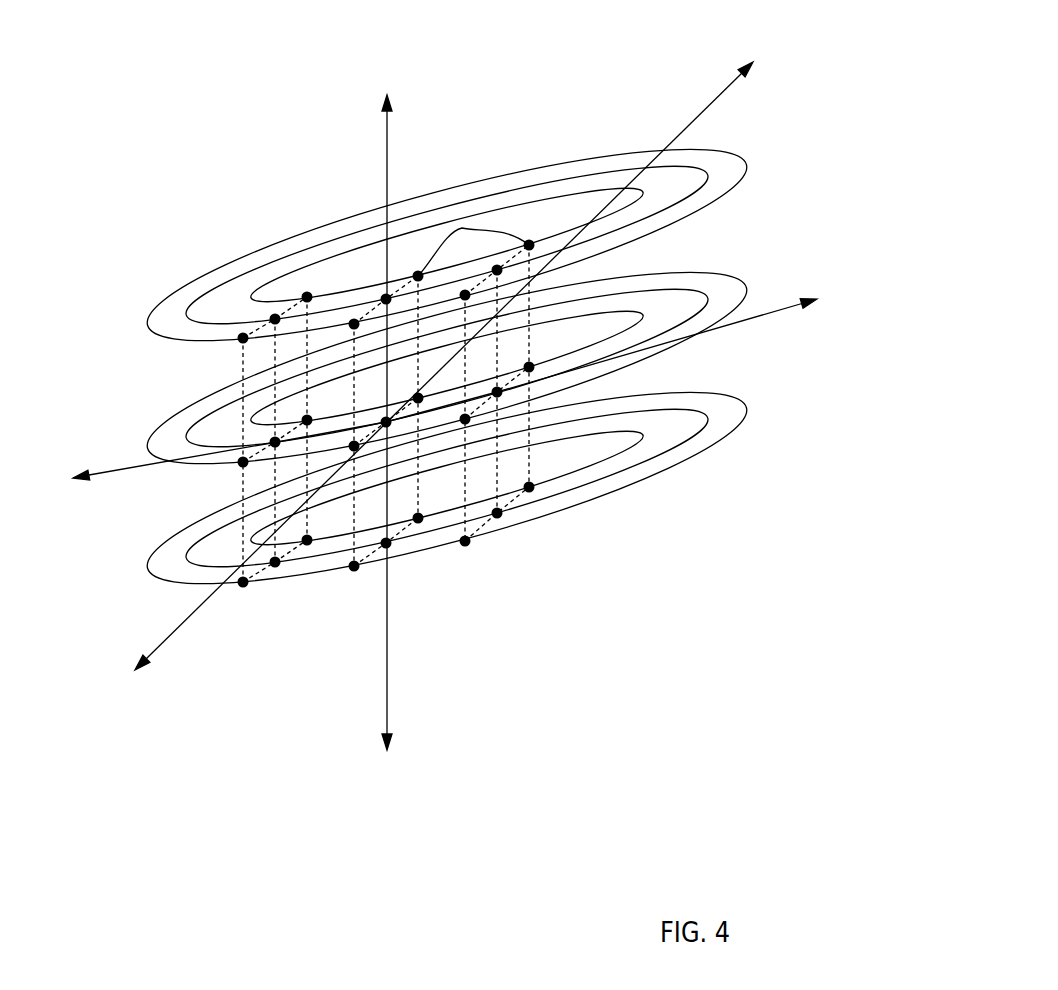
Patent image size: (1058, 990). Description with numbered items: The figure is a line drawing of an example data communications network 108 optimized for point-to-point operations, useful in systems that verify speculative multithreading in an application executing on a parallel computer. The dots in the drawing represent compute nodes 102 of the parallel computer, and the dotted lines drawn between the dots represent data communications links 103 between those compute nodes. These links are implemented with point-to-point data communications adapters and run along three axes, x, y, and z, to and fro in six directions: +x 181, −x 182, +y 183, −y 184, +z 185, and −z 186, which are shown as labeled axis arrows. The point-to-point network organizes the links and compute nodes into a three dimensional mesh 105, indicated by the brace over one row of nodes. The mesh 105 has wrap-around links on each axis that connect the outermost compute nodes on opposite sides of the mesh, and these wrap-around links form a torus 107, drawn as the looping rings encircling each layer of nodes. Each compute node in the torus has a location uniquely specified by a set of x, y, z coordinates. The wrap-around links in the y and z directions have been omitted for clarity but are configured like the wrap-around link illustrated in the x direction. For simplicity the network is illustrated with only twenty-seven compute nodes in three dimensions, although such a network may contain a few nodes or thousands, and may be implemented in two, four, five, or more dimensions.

The compute nodes 102 is at (529, 487).
The data communications links 103 is at (242, 490).
The three dimensional mesh 105 is at (472, 223).
The torus 107 is at (221, 243).
The data communications network 108 is at (346, 965).
The +x direction 181 is at (852, 326).
The −x direction 182 is at (72, 515).
The +y direction 183 is at (795, 83).
The −y direction 184 is at (133, 718).
The +z direction 185 is at (402, 85).
The −z direction 186 is at (404, 803).